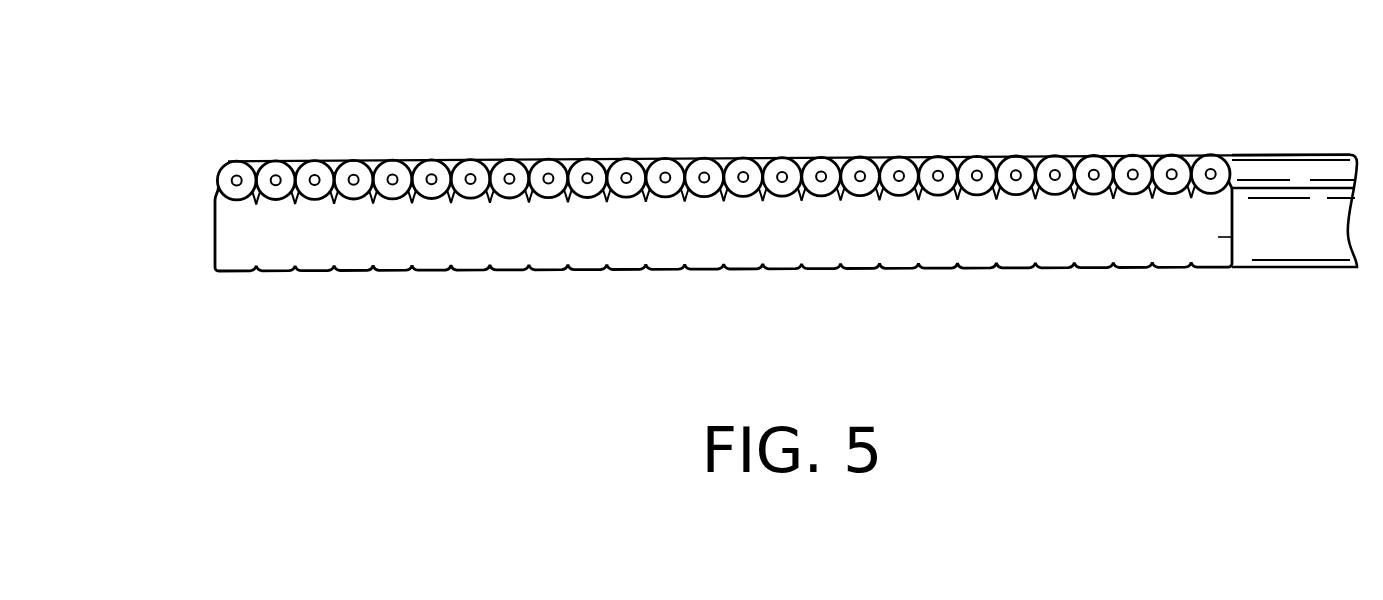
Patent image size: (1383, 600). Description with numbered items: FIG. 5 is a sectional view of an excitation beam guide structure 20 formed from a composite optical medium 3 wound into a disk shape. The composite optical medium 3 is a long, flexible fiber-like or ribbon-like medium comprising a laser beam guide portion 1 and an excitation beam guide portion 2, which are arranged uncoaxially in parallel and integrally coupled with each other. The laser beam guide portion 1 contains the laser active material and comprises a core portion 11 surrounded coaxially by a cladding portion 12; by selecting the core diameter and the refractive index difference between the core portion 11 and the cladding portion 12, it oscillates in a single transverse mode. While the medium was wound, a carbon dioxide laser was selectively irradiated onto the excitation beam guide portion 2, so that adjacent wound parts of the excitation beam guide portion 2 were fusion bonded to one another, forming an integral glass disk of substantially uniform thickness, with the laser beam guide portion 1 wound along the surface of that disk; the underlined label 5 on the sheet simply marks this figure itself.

The laser beam guide portion 1 is at (728, 119).
The core portion 11 is at (318, 97).
The cladding portion 12 is at (245, 162).
The excitation beam guide portion 2 is at (1232, 237).
The composite optical medium 3 is at (768, 151).
The excitation beam guide structure 20 is at (214, 229).
The assembly 5 is at (796, 347).